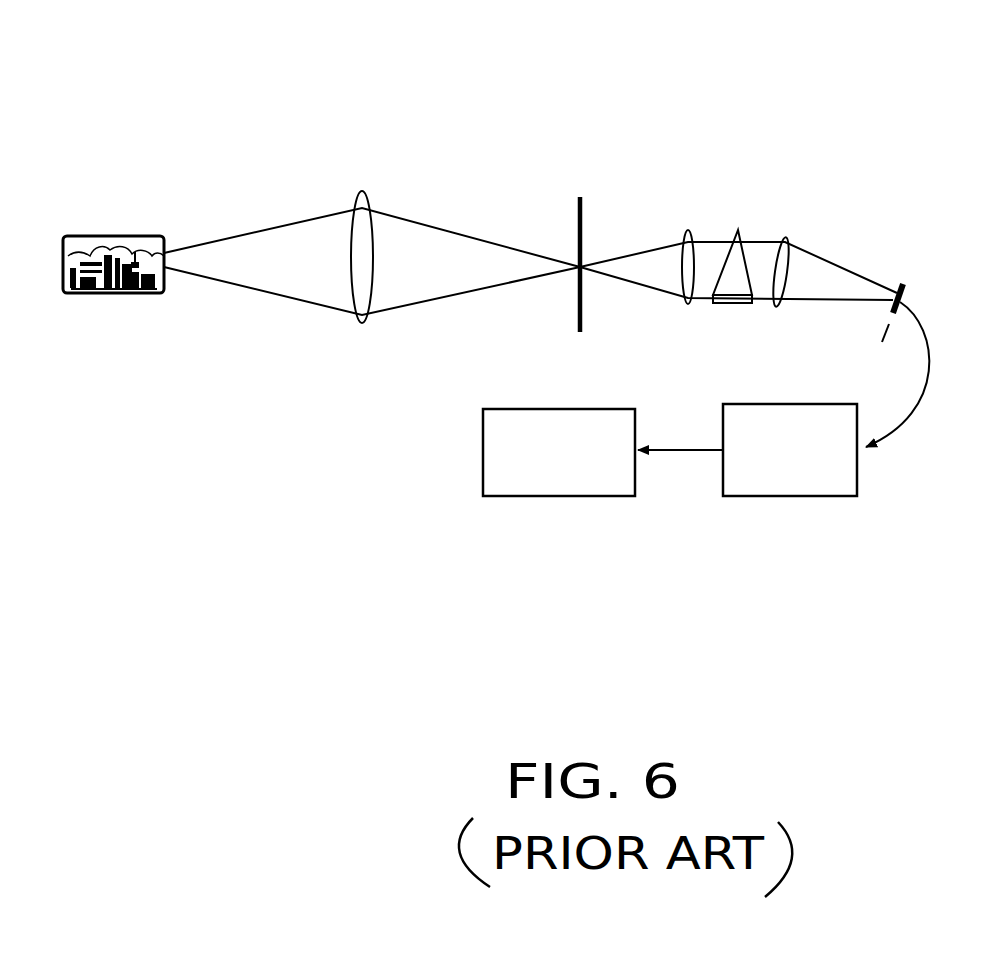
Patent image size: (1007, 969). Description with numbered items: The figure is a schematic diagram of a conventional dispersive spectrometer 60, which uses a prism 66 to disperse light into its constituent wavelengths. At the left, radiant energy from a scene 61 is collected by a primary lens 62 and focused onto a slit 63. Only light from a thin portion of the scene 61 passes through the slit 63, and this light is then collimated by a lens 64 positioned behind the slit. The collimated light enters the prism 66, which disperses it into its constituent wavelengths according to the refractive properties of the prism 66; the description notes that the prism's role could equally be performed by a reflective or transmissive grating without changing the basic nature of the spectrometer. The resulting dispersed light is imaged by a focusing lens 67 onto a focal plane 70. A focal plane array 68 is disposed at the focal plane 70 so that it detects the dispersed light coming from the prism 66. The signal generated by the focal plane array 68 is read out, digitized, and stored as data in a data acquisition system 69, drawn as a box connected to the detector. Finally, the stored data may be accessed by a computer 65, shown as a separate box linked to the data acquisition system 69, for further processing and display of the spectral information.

The dispersive spectrometer 60 is at (940, 81).
The scene 61 is at (128, 236).
The primary lens 62 is at (360, 191).
The slit 63 is at (580, 192).
The lens 64 is at (687, 303).
The computer 65 is at (526, 408).
The prism 66 is at (746, 218).
The focusing lens 67 is at (780, 308).
The focal plane array 68 is at (906, 280).
The data acquisition system 69 is at (791, 404).
The focal plane 70 is at (902, 272).